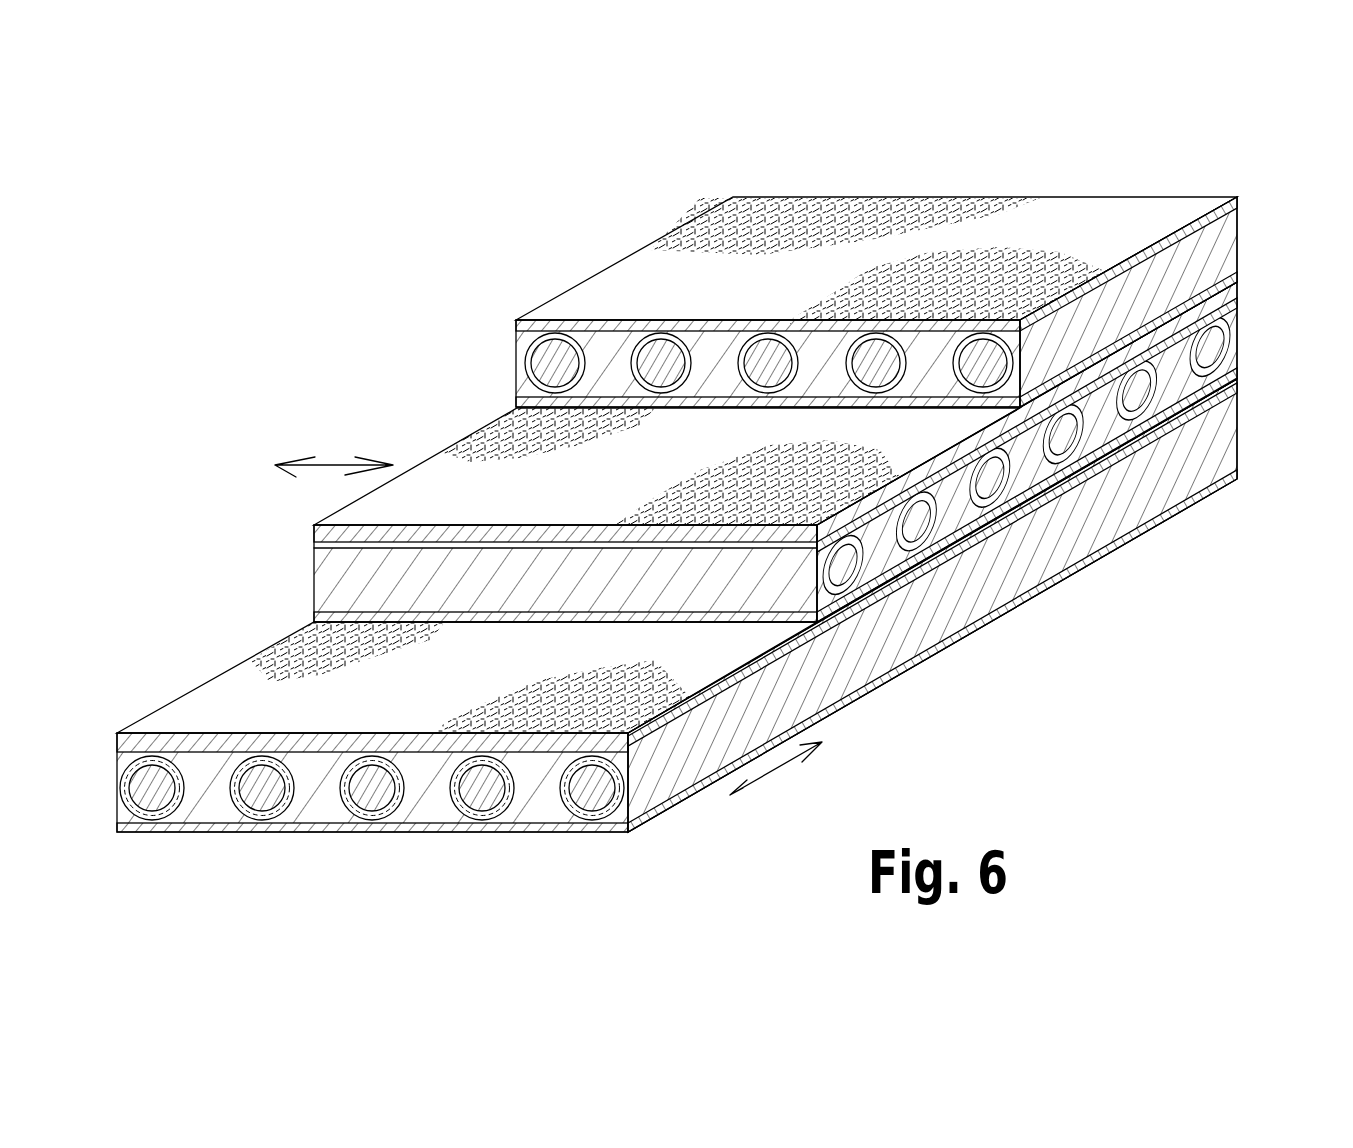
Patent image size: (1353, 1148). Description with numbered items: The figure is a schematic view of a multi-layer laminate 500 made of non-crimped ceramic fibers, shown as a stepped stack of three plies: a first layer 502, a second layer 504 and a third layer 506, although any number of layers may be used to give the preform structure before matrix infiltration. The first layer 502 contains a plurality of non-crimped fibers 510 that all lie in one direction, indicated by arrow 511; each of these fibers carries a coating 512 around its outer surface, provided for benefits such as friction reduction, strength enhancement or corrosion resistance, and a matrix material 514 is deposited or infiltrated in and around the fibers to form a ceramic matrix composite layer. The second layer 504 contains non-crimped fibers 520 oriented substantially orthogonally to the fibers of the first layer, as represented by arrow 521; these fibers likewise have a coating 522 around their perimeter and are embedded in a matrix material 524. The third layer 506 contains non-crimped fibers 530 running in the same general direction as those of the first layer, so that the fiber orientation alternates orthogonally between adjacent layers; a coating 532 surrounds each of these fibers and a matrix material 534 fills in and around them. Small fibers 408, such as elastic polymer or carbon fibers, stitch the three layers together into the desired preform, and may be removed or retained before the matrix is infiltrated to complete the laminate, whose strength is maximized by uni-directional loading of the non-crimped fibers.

The multi-layer laminate 500 is at (710, 492).
The first layer 502 is at (709, 643).
The second layer 504 is at (808, 519).
The third layer 506 is at (864, 300).
The small fibers 408 is at (815, 197).
The non-crimped fibers 510 is at (593, 790).
The coating 512 is at (453, 803).
The matrix material 514 is at (203, 803).
The non-crimped fibers 520 is at (925, 565).
The coating 522 is at (957, 555).
The matrix material 524 is at (870, 565).
The non-crimped fibers 530 is at (543, 367).
The coating 532 is at (524, 322).
The matrix material 534 is at (615, 338).
The arrow 521 is at (338, 462).
The arrow 511 is at (785, 775).